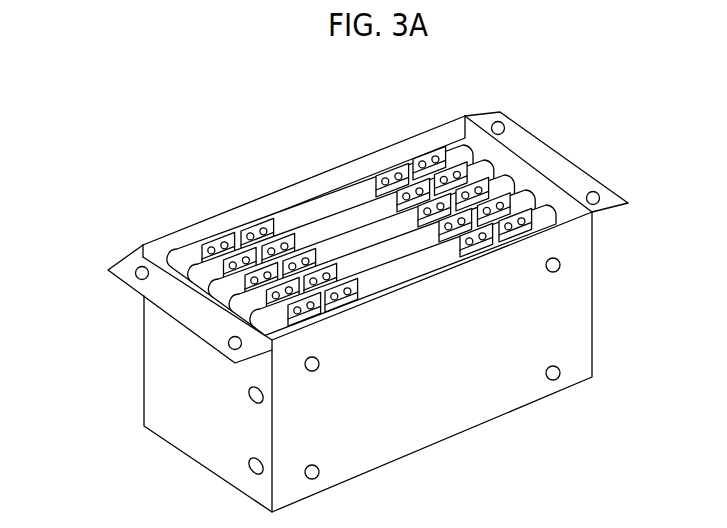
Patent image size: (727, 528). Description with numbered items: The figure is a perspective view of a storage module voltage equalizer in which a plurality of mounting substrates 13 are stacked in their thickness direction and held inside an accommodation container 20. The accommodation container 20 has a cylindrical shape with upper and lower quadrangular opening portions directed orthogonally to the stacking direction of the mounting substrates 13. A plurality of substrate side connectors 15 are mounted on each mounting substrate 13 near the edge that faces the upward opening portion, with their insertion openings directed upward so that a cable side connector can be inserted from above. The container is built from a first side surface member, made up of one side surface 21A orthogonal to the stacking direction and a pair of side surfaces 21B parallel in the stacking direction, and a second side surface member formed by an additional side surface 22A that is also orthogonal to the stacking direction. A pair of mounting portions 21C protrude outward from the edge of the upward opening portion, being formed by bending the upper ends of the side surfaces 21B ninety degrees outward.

The mounting substrate 13 is at (328, 239).
The substrate side connector 15 is at (235, 233).
The accommodation container 20 is at (362, 305).
The side surface 21A is at (437, 125).
The side surfaces 21B is at (167, 388).
The mounting portion 21C is at (120, 282).
The additional side surface 22A is at (573, 310).